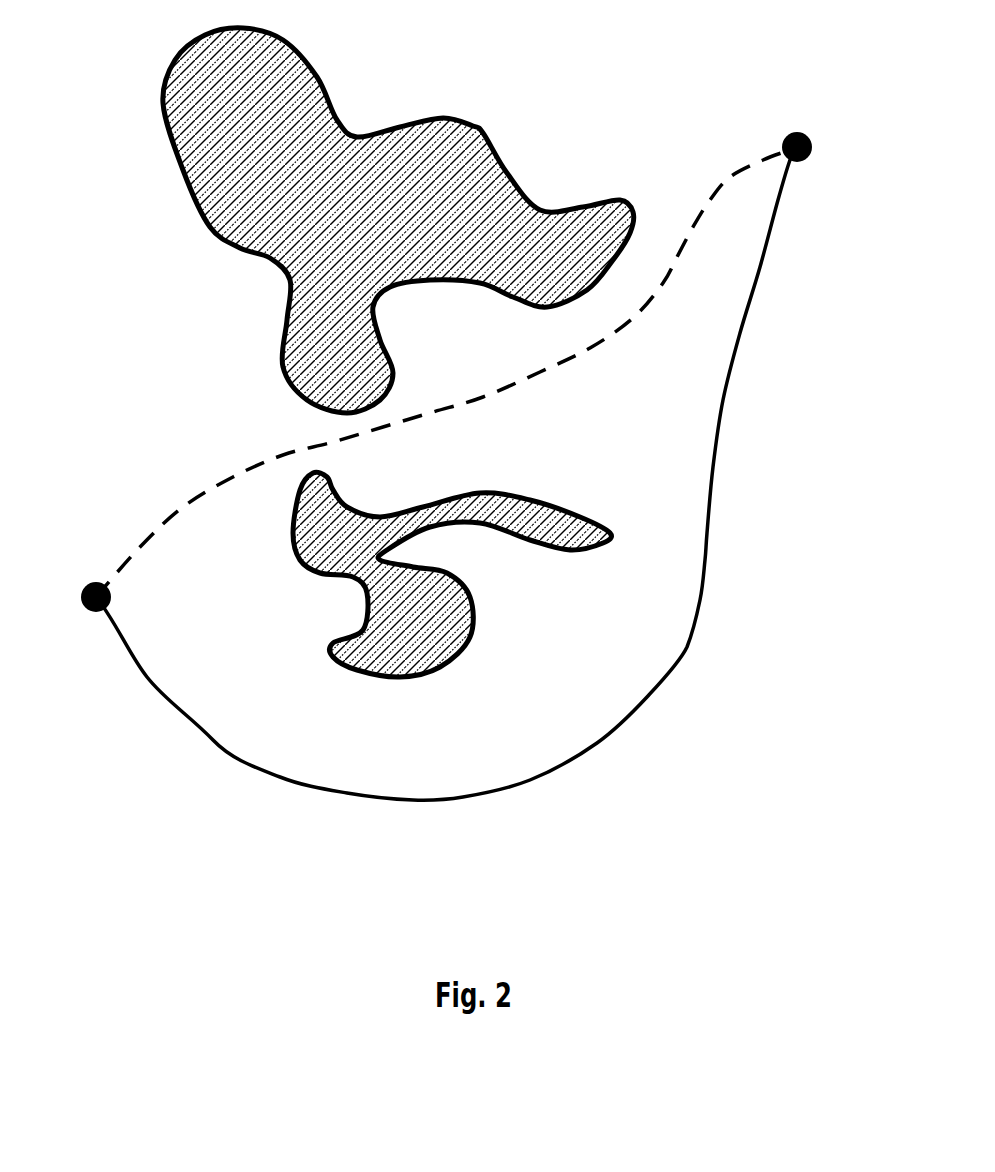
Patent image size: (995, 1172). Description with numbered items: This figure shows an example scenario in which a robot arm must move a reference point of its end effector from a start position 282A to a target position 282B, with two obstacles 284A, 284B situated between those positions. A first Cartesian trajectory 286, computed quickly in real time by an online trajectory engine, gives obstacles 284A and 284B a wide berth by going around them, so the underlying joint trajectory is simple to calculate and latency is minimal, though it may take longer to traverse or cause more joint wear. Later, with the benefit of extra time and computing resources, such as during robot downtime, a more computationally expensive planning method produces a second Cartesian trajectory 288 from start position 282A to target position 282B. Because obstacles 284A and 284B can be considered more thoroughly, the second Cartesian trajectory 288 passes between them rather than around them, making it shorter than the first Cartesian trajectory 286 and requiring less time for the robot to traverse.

The start position 282A is at (82, 591).
The target position 282B is at (812, 146).
The obstacle 284A is at (483, 133).
The obstacle 284B is at (523, 547).
The first Cartesian trajectory 286 is at (687, 645).
The second Cartesian trajectory 288 is at (730, 178).